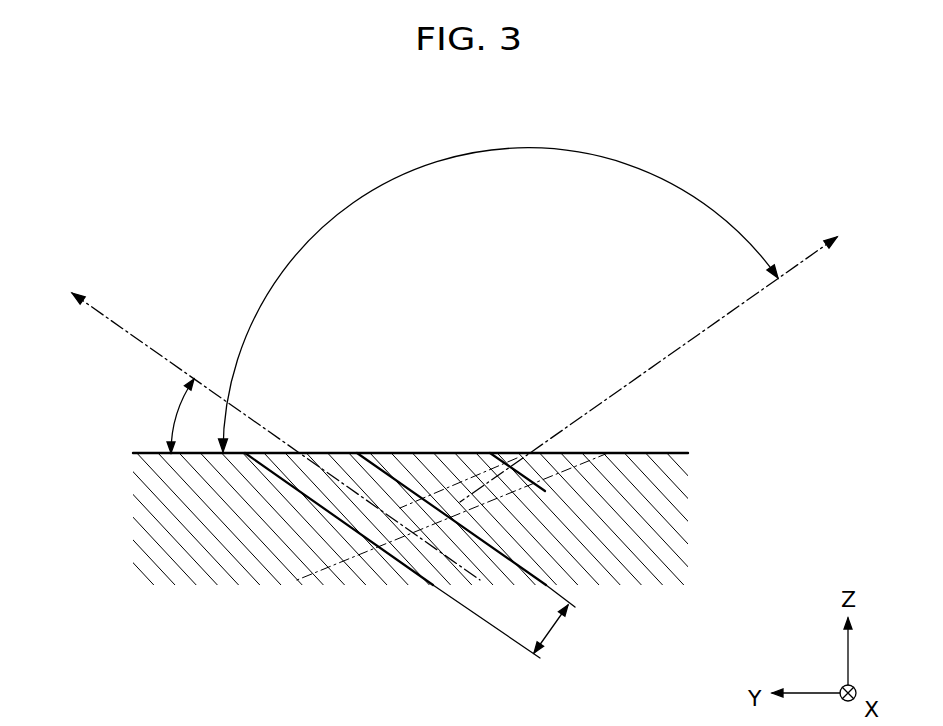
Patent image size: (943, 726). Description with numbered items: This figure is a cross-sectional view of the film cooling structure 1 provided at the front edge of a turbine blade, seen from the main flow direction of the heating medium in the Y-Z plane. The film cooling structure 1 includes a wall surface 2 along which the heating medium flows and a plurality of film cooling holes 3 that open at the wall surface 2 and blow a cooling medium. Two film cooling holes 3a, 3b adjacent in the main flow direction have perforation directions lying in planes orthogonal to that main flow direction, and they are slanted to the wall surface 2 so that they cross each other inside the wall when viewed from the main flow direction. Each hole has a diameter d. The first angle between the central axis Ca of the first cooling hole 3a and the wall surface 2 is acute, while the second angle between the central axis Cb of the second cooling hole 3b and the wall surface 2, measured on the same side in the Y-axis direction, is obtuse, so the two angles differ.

The film cooling structure 1 is at (212, 340).
The wall surface 2 is at (653, 452).
The film cooling holes 3 is at (410, 517).
The first cooling hole 3a is at (360, 457).
The second cooling hole 3b is at (497, 457).
The central axis Ca is at (132, 337).
The central axis Cb is at (727, 315).
The diameter d is at (552, 630).